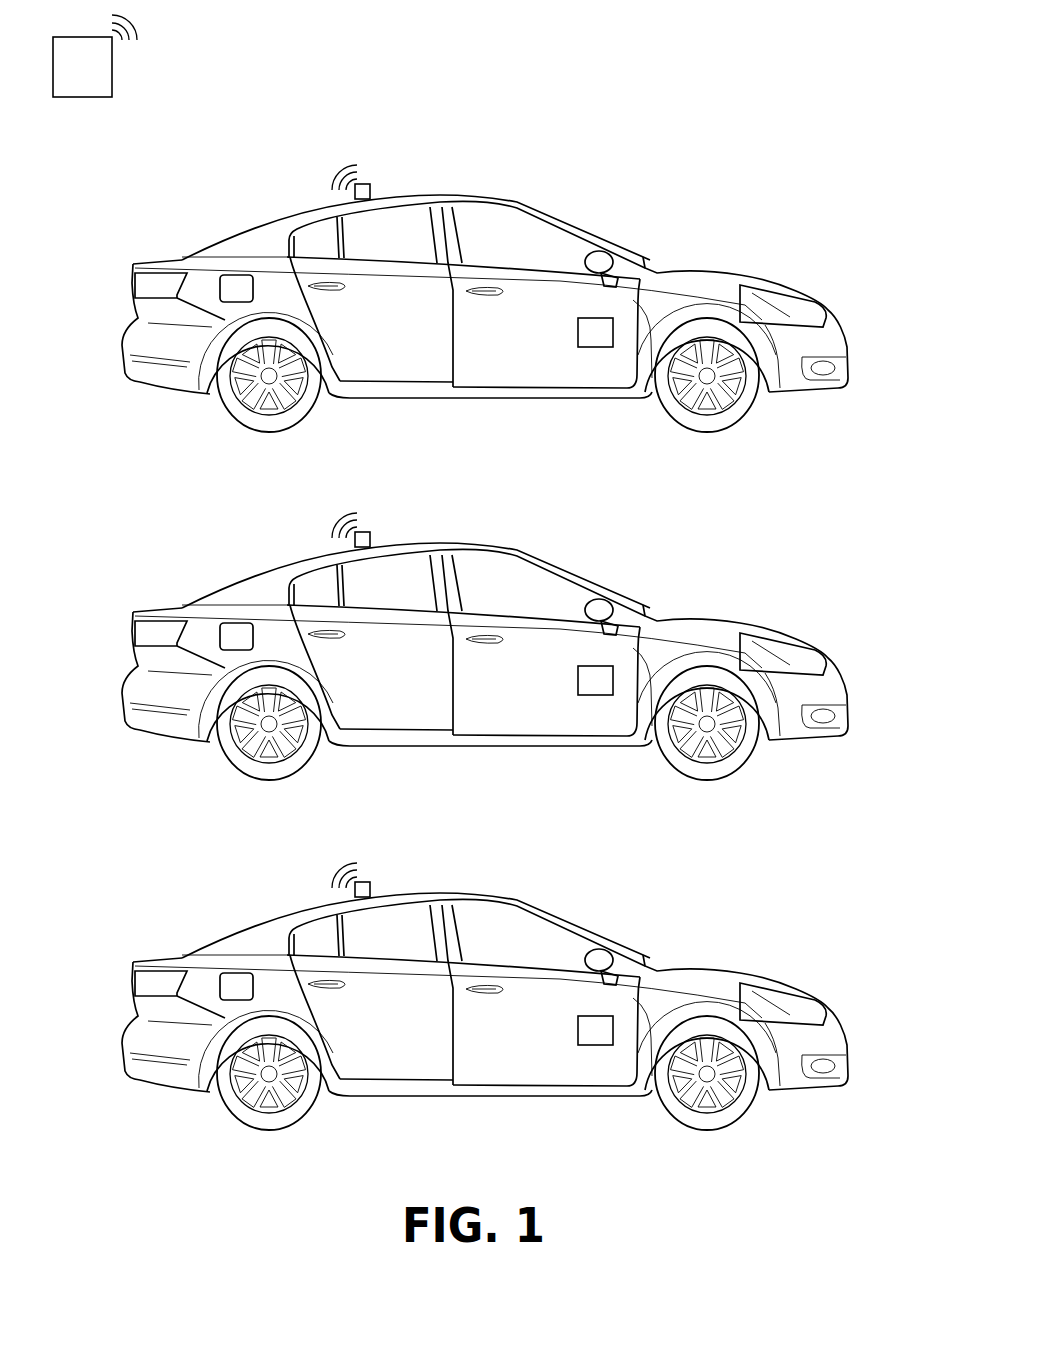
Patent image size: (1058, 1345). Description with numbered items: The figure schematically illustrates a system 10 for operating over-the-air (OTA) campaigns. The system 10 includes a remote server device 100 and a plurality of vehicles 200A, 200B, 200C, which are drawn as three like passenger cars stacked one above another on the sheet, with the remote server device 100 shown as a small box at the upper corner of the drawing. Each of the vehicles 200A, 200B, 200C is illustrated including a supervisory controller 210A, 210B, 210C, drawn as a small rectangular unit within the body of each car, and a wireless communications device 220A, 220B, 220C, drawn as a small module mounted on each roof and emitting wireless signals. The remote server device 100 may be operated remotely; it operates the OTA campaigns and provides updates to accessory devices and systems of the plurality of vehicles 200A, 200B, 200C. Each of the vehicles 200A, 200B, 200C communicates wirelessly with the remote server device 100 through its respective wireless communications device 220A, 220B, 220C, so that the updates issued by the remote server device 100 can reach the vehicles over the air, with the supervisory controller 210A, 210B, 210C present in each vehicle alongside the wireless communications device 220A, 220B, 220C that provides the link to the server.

The system 10 is at (832, 72).
The remote server device 100 is at (102, 76).
The vehicle 200A is at (515, 201).
The vehicle 200B is at (485, 636).
The vehicle 200C is at (485, 986).
The supervisory controller 210A is at (613, 325).
The supervisory controller 210B is at (670, 627).
The supervisory controller 210C is at (670, 977).
The wireless communications device 220A is at (370, 191).
The wireless communications device 220B is at (407, 514).
The wireless communications device 220C is at (407, 864).